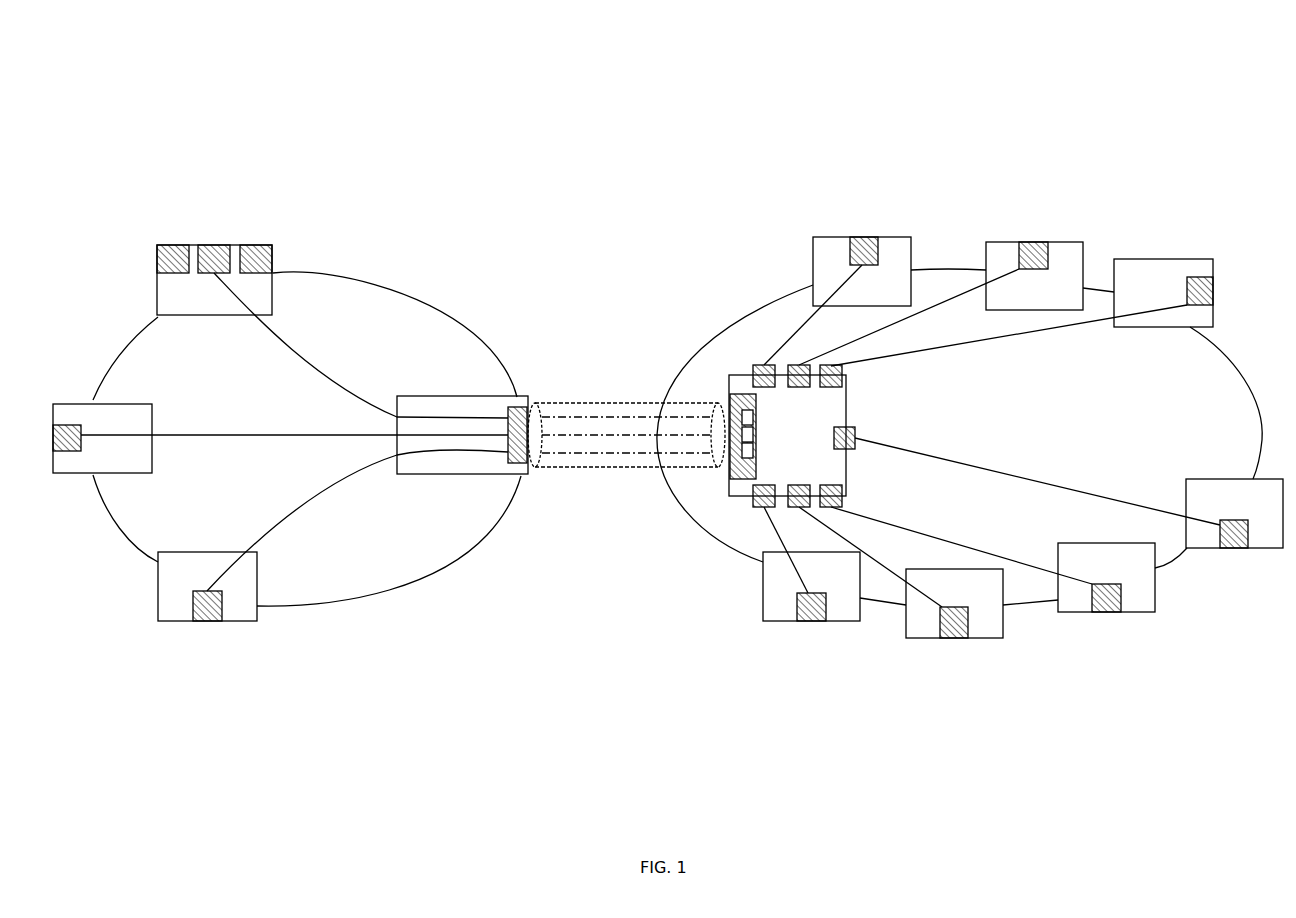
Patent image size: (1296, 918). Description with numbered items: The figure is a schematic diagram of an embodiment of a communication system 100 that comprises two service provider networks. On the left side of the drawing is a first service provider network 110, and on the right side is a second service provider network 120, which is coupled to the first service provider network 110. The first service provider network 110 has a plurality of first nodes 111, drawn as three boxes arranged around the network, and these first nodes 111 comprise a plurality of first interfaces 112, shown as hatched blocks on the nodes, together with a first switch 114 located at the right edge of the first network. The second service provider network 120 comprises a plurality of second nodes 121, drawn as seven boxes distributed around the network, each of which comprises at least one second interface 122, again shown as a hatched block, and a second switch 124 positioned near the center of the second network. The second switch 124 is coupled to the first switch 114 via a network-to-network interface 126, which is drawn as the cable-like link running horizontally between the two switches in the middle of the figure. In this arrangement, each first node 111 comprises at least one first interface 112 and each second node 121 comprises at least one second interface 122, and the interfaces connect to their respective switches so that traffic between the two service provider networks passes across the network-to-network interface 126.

The communication system 100 is at (1217, 67).
The first service provider network 110 is at (395, 331).
The first nodes 111 is at (157, 295).
The first interfaces 112 is at (214, 245).
The first switch 114 is at (428, 474).
The network-to-network interface (NNI) 126 is at (594, 467).
The second switch 124 is at (846, 402).
The second service provider network 120 is at (1218, 411).
The second nodes 121 is at (911, 237).
The second interfaces 122 is at (865, 237).